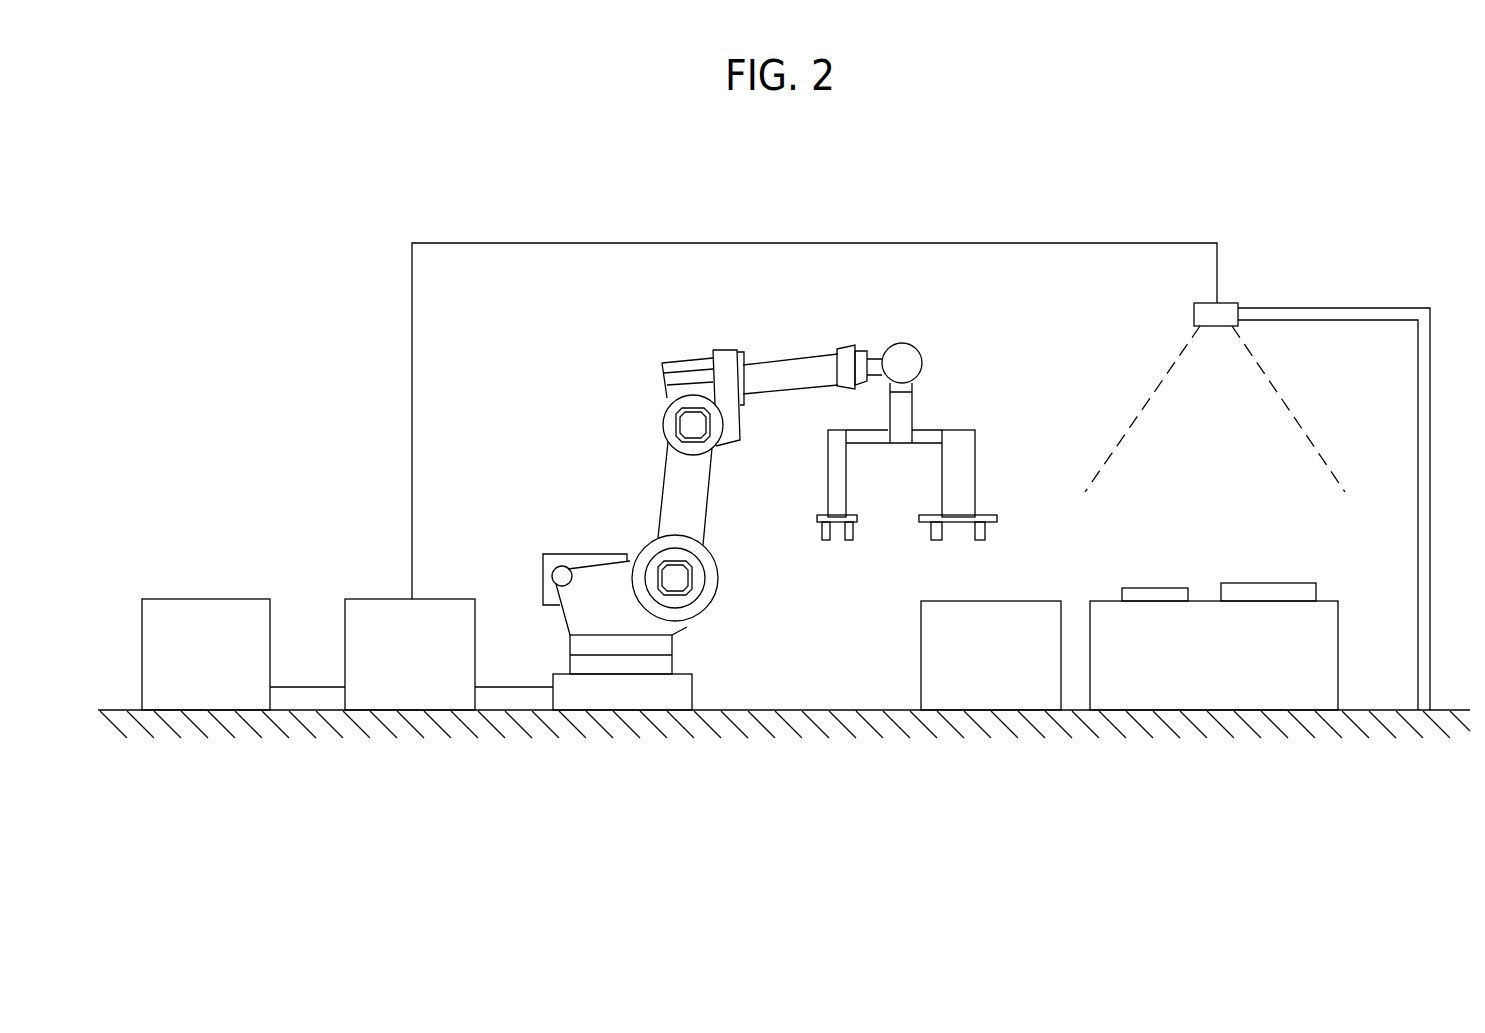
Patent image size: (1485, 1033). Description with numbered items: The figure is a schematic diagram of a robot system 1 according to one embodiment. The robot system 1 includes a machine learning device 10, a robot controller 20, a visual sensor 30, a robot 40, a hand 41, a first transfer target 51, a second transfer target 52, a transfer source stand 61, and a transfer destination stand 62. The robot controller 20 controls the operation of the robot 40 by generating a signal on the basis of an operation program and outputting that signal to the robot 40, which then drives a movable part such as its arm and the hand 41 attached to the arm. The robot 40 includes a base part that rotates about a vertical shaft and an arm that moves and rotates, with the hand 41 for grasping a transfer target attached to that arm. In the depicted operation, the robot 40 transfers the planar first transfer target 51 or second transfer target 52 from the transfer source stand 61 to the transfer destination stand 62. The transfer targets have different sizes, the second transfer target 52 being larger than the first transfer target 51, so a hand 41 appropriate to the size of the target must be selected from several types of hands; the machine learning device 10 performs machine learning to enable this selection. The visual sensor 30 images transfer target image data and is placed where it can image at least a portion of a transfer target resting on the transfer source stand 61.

The robot system 1 is at (1040, 182).
The machine learning device 10 is at (245, 598).
The robot controller 20 is at (457, 598).
The visual sensor 30 is at (1231, 300).
The robot 40 is at (573, 553).
The hand 41 is at (933, 545).
The first transfer target 51 is at (1155, 588).
The second transfer target 52 is at (1268, 583).
The transfer source stand 61 is at (1160, 695).
The transfer destination stand 62 is at (948, 695).